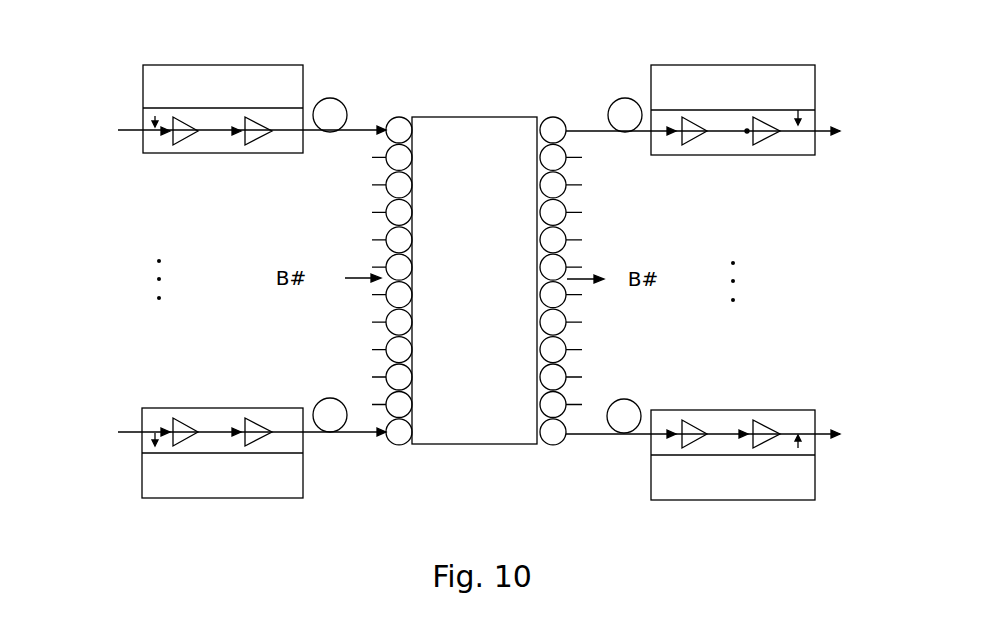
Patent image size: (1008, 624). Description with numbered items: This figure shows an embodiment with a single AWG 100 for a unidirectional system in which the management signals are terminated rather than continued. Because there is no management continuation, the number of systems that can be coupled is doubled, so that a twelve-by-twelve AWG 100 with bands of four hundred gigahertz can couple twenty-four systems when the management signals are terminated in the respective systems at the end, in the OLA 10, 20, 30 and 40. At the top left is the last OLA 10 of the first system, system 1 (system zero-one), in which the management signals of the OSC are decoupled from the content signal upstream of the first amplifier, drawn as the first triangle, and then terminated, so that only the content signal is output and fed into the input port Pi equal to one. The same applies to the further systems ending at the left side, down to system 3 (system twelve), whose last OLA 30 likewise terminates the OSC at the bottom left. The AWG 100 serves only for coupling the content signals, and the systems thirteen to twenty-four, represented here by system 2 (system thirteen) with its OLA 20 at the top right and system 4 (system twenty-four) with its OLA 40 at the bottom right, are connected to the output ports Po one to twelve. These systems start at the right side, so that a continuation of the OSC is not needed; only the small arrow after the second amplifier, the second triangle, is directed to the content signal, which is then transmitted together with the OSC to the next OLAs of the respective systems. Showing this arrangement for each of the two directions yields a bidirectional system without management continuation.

The system 1 (system 01) 1 is at (243, 45).
The system 2 (system 13) 2 is at (745, 163).
The system 3 (system 012) 3 is at (222, 393).
The system 4 (system 24) 4 is at (727, 390).
The OLA 10 is at (218, 155).
The OLA 20 is at (672, 157).
The OLA 30 is at (237, 500).
The OLA 40 is at (712, 503).
The AWG 100 is at (526, 310).